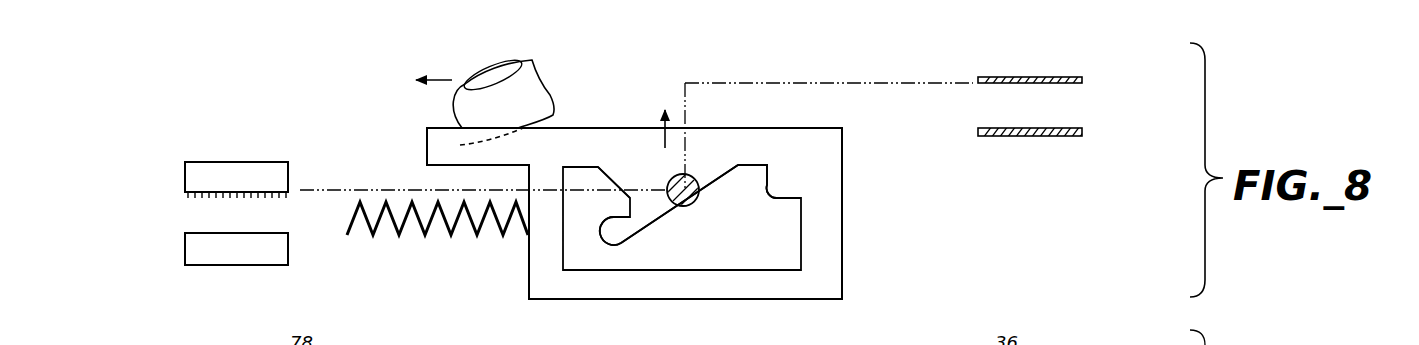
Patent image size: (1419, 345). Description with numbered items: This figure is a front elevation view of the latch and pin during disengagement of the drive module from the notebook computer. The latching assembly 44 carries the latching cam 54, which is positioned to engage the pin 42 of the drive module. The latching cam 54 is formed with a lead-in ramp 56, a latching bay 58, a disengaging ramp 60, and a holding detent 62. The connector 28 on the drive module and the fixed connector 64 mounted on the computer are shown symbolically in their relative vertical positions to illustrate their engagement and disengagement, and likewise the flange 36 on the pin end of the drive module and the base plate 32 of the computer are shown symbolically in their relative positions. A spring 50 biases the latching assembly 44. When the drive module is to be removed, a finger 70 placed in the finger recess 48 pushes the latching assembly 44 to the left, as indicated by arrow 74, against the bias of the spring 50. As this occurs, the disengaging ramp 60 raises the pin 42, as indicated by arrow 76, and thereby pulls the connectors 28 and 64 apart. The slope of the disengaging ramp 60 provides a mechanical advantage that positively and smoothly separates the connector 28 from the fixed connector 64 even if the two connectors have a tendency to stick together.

The connector 28 is at (247, 173).
The base plate 32 is at (1035, 137).
The flange 36 is at (1037, 75).
The pin 42 is at (695, 175).
The latching assembly 44 is at (856, 244).
The finger recess 48 is at (460, 145).
The spring 50 is at (420, 223).
The latching cam 54 is at (737, 257).
The lead-in ramp 56 is at (608, 164).
The latching bay 58 is at (620, 244).
The disengaging ramp 60 is at (700, 193).
The holding detent 62 is at (768, 185).
The fixed connector 64 is at (247, 250).
The finger 70 is at (528, 92).
The arrow 74 is at (437, 80).
The arrow 76 is at (663, 123).